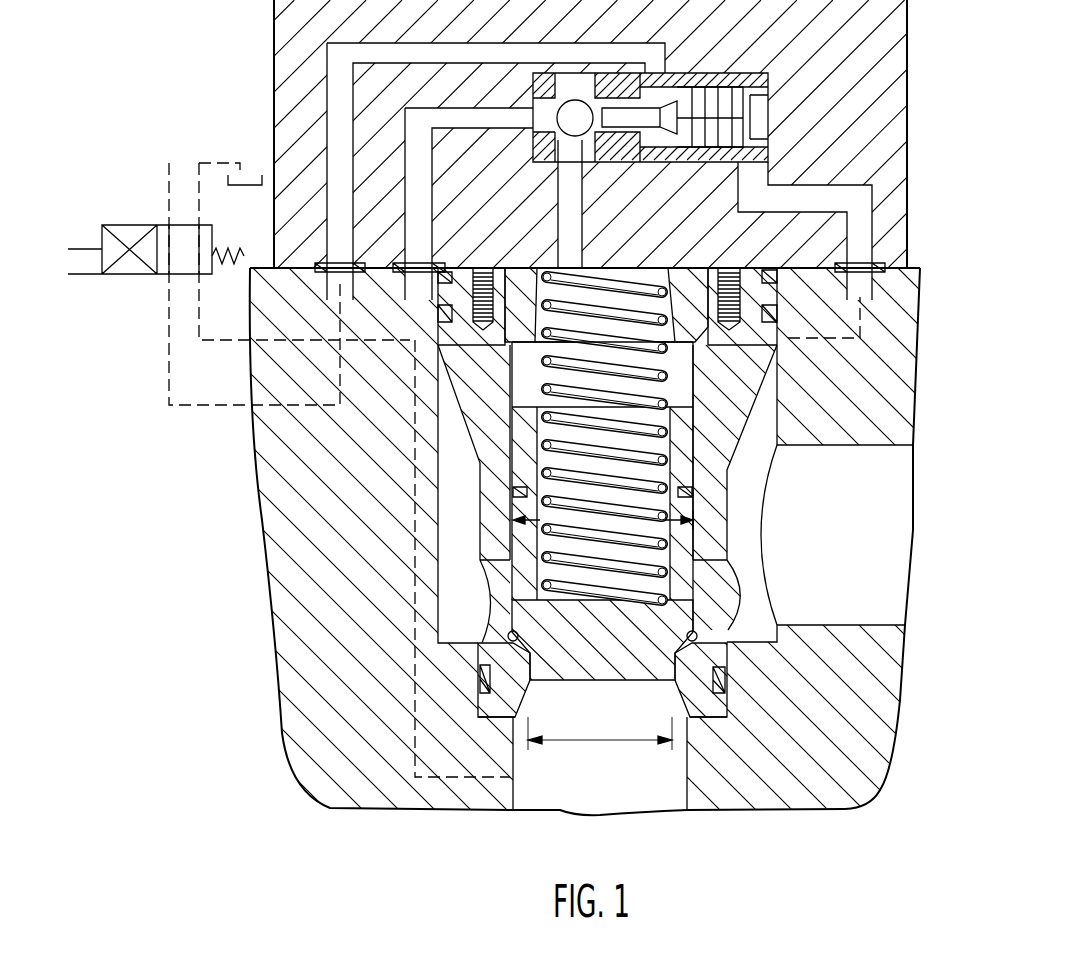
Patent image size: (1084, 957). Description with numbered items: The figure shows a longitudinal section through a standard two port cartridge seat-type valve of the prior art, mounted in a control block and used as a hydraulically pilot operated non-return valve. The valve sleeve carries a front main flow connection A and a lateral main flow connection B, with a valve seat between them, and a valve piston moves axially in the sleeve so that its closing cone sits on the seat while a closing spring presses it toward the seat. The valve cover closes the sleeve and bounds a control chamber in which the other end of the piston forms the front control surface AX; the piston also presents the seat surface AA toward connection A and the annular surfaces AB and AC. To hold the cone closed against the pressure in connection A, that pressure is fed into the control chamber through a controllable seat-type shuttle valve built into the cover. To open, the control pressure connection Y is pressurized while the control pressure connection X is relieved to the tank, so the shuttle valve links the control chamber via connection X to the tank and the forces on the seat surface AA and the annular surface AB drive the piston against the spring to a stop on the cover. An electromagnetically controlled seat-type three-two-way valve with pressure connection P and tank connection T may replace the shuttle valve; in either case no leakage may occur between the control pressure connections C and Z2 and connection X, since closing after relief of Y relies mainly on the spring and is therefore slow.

The control pressure connection X is at (350, 337).
The control pressure connection Z2 is at (422, 337).
The control pressure connection C is at (570, 228).
The control pressure connection Y is at (852, 301).
The front main flow connection A is at (602, 763).
The seat surface A_A AA is at (620, 743).
The lateral main flow connection B is at (820, 543).
The front control surface A_X AX is at (677, 400).
The annular surface A_C AC is at (698, 535).
The annular surface A_B AB is at (690, 635).
The pressure connection P is at (204, 284).
The tank connection T is at (529, 470).